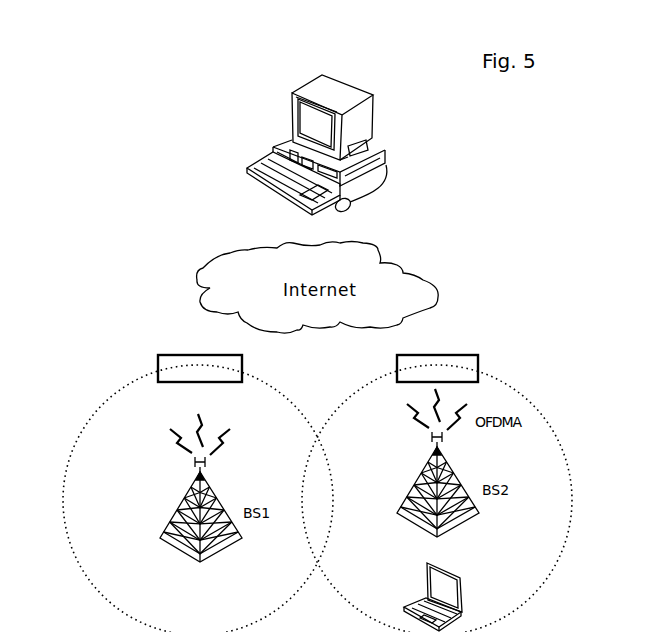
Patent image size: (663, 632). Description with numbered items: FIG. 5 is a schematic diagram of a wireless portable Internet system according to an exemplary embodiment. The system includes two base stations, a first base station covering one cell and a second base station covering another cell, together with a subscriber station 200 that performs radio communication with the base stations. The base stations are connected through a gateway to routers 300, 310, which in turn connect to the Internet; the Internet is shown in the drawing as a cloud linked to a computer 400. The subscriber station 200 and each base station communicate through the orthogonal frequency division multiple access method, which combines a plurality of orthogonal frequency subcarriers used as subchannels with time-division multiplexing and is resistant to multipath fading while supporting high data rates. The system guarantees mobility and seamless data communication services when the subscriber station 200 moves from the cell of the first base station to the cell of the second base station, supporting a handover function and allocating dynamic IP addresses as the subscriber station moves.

The computer 400 is at (373, 119).
The router 310 is at (158, 366).
The router 300 is at (478, 364).
The subscriber station 200 is at (411, 607).